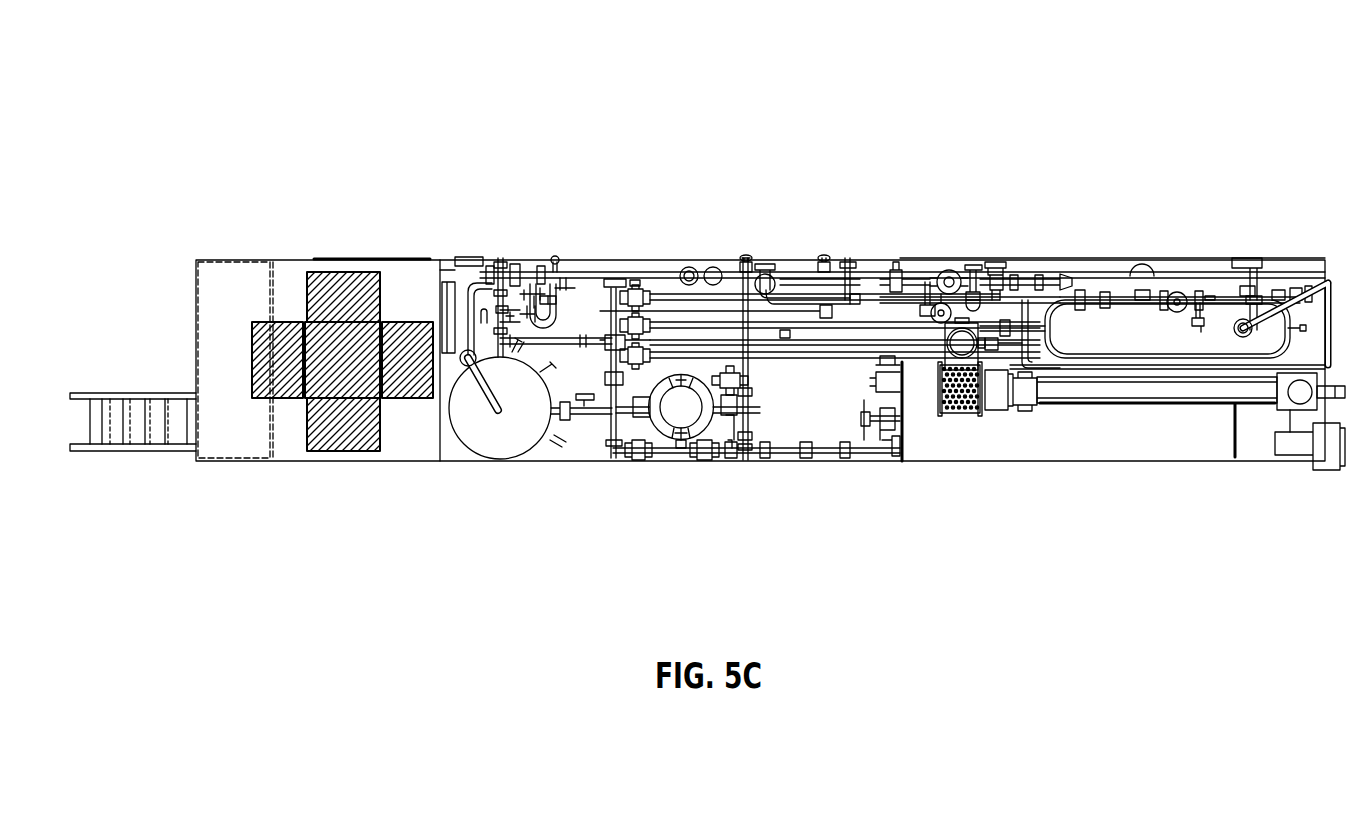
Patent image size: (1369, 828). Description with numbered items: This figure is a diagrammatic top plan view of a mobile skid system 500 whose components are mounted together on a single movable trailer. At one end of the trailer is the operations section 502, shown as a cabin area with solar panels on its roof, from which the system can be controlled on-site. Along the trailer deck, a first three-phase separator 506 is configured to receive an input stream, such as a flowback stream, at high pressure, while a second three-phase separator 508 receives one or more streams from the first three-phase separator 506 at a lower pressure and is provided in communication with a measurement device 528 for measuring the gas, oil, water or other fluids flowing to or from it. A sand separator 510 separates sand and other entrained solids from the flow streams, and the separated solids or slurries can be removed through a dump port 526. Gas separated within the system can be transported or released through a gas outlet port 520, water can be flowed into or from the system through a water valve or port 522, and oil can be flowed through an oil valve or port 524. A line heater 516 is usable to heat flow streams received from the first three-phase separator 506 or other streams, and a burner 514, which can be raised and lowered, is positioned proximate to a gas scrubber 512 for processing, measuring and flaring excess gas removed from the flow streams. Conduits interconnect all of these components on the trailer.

The mobile skid system 500 is at (418, 94).
The operations section 502 is at (237, 273).
The first three-phase separator 506 is at (1142, 318).
The second three-phase separator 508 is at (517, 407).
The sand separator 510 is at (688, 407).
The gas scrubber 512 is at (938, 270).
The burner 514 is at (1082, 392).
The line heater 516 is at (1167, 425).
The gas outlet port 520 is at (998, 260).
The water valve or port 522 is at (973, 262).
The oil valve or port 524 is at (825, 258).
The dump port 526 is at (747, 258).
The measurement device 528 is at (522, 270).